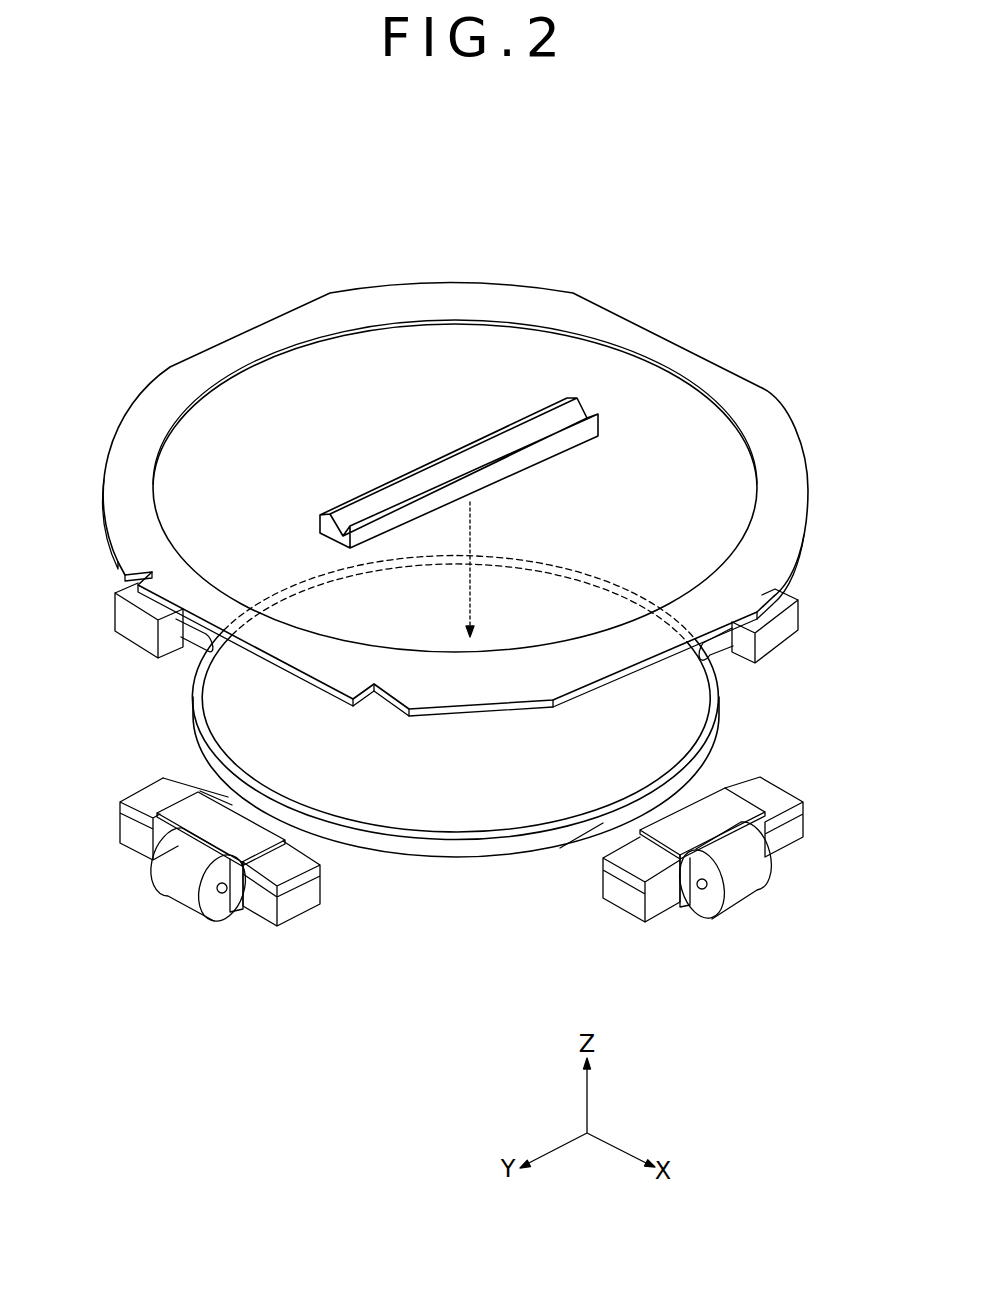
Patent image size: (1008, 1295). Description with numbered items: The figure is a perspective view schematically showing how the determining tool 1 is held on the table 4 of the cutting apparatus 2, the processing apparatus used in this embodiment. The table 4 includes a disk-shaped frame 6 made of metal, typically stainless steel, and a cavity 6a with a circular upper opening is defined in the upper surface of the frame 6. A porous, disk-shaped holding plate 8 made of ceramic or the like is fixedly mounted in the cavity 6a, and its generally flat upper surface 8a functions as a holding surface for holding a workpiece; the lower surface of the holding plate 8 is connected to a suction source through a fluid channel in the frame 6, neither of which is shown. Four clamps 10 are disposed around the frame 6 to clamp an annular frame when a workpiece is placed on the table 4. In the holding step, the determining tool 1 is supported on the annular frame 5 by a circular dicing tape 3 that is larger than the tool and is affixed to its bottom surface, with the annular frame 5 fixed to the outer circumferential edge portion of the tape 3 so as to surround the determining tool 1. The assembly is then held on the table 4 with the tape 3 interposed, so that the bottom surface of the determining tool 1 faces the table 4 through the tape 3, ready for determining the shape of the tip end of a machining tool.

The determining tool 1 is at (440, 452).
The cutting apparatus 2 is at (246, 230).
The tape 3 is at (250, 390).
The table 4 is at (358, 983).
The annular frame 5 is at (768, 421).
The frame 6 is at (481, 862).
The cavity 6a is at (700, 706).
The holding plate 8 is at (378, 766).
The upper surface 8a is at (273, 733).
The clamps 10 is at (748, 917).